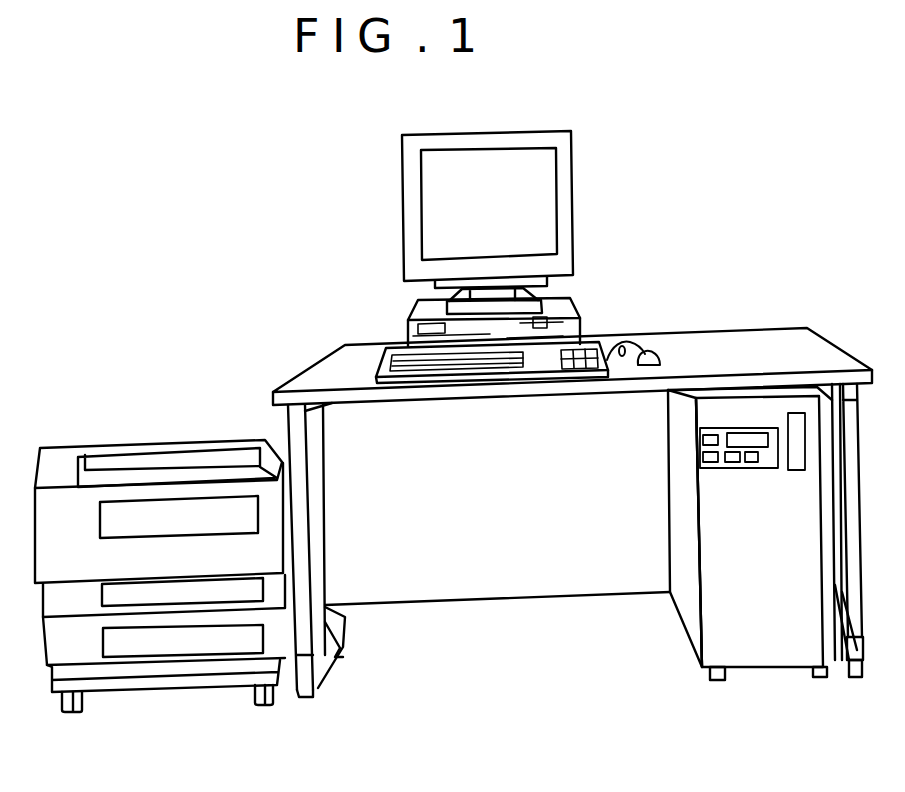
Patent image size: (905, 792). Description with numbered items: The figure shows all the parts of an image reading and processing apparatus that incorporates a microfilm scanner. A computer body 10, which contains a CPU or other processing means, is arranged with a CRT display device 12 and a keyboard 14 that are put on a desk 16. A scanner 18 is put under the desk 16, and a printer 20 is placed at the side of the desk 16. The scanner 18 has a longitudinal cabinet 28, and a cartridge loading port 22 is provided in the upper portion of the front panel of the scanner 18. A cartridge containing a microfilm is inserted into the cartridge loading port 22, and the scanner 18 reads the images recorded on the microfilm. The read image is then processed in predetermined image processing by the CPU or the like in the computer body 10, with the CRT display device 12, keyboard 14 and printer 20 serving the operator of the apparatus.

The computer body 10 is at (580, 298).
The CRT display device 12 is at (577, 175).
The keyboard 14 is at (378, 378).
The desk 16 is at (735, 333).
The scanner 18 is at (728, 566).
The printer 20 is at (144, 440).
The cartridge loading port 22 is at (798, 462).
The cabinet 28 is at (722, 608).